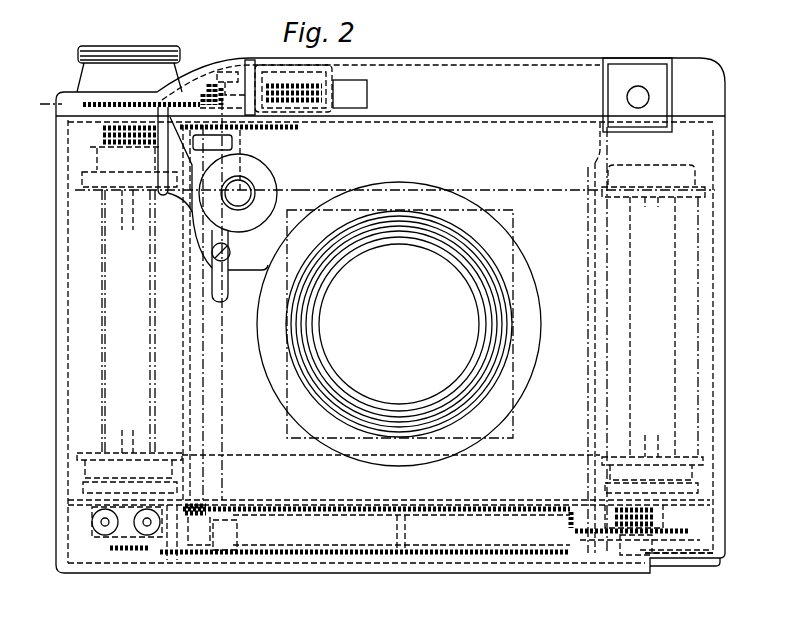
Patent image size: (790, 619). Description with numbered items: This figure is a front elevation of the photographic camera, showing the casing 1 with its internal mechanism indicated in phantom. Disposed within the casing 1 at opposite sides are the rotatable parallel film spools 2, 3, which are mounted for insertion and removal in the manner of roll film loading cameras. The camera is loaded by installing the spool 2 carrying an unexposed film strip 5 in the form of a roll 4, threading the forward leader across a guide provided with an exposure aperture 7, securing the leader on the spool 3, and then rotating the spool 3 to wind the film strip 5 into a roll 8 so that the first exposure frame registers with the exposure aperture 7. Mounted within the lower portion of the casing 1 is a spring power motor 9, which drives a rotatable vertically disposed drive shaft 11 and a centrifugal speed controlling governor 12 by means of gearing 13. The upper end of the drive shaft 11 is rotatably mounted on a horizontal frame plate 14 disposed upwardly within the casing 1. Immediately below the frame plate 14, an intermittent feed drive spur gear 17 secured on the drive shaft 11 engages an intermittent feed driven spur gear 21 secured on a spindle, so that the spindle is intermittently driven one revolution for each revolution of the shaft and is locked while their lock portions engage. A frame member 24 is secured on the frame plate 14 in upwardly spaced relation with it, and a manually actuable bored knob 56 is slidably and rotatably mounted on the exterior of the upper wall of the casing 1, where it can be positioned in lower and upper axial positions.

The casing 1 is at (718, 152).
The film spool 2 is at (718, 193).
The film spool 3 is at (74, 192).
The roll 4 is at (32, 88).
The film strip 5 is at (559, 194).
The exposure aperture 7 is at (513, 230).
The roll 8 is at (102, 305).
The spring power motor 9 is at (367, 545).
The drive shaft 11 is at (223, 418).
The centrifugal speed controlling governor 12 is at (128, 530).
The gearing 13 is at (218, 500).
The frame plate 14 is at (323, 116).
The intermittent feed drive spur gear 17 is at (236, 147).
The intermittent feed driven spur gear 21 is at (288, 126).
The frame member 24 is at (278, 70).
The knob 56 is at (129, 60).